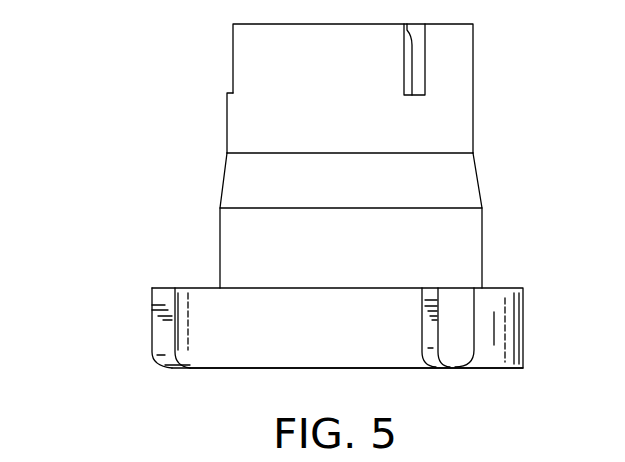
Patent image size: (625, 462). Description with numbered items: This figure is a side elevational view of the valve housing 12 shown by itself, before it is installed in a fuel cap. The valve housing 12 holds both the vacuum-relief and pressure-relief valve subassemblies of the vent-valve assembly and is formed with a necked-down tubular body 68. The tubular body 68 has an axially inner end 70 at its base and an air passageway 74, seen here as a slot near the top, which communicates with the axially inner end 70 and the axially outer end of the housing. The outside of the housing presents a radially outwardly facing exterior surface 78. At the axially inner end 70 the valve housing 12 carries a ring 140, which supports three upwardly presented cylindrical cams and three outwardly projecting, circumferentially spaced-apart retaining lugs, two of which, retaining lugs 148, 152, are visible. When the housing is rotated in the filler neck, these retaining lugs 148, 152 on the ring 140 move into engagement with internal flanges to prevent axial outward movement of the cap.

The valve housing 12 is at (206, 84).
The air passageway 74 is at (410, 73).
The radially outwardly facing exterior surface 78 is at (237, 144).
The necked-down tubular body 68 is at (473, 130).
The axially inner end 70 is at (506, 368).
The ring 140 is at (312, 348).
The retaining lug 148 is at (452, 346).
The retaining lug 152 is at (160, 340).